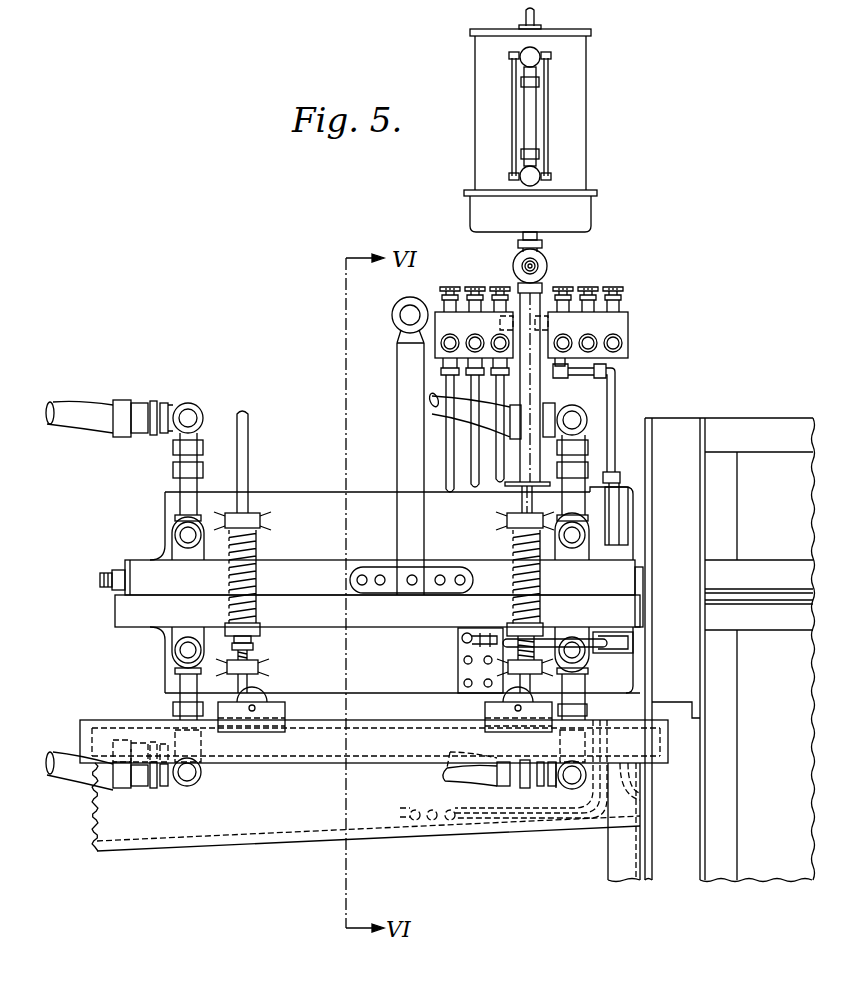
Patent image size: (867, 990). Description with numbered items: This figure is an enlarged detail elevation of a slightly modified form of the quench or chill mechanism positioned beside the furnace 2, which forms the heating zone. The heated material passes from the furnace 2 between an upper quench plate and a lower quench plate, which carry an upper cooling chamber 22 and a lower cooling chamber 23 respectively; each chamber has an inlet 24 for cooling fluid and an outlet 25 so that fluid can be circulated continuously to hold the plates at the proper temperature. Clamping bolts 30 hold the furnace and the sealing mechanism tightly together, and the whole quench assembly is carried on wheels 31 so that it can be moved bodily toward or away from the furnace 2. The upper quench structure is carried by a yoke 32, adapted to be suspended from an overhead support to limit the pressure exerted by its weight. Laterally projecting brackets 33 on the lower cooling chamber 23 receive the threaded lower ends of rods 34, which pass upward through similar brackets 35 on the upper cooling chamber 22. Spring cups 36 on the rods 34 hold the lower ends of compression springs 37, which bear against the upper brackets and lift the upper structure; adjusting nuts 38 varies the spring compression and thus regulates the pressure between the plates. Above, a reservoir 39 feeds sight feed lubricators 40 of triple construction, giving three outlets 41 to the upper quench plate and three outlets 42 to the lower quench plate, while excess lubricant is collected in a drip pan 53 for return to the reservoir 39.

The furnace 2 is at (780, 541).
The cooling chamber 22 is at (391, 523).
The cooling chamber 23 is at (395, 660).
The inlet 24 is at (432, 405).
The outlet 25 is at (77, 409).
The clamping bolts 30 is at (579, 639).
The wheels 31 is at (255, 716).
The yoke 32 is at (405, 376).
The brackets 33 is at (247, 667).
The rods 34 is at (249, 464).
The brackets 35 is at (246, 514).
The spring cups 36 is at (250, 630).
The compression springs 37 is at (256, 552).
The nuts 38 is at (252, 648).
The reservoir 39 is at (578, 128).
The sight feed lubricators 40 is at (628, 326).
The outlets 41 is at (607, 383).
The outlets 42 is at (499, 481).
The drip pan 53 is at (274, 823).